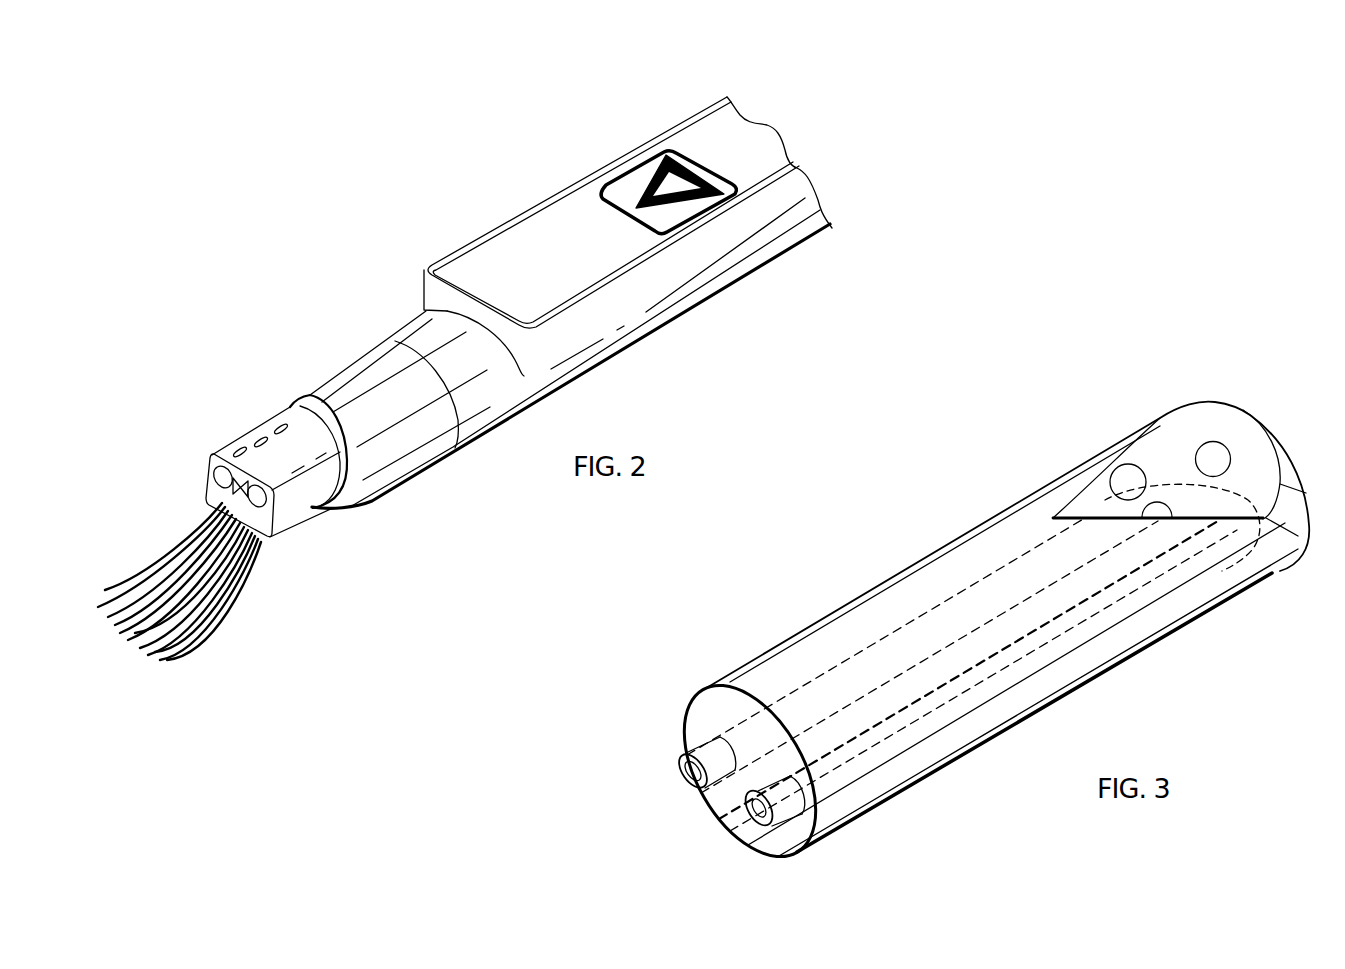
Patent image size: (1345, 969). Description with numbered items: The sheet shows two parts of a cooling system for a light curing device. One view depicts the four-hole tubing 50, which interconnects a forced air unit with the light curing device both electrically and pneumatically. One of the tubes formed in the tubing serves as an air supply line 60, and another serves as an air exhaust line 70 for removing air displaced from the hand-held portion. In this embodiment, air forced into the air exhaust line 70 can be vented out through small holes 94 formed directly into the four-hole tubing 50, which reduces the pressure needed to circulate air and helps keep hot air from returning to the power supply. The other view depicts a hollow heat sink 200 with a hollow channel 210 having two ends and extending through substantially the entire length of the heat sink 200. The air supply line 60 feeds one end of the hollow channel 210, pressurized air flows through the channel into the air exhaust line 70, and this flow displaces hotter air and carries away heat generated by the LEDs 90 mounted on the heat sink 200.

In FIG. 2, the four-hole tubing 50 is at (308, 524).
In FIG. 2, the air supply line 60 is at (260, 500).
In FIG. 3, the air supply line 60 is at (780, 806).
In FIG. 2, the air exhaust line 70 is at (222, 477).
In FIG. 3, the air exhaust line 70 is at (710, 752).
In FIG. 3, the LEDs 90 is at (1157, 500).
In FIG. 2, the small holes 94 is at (281, 427).
In FIG. 3, the hollow heat sink 200 is at (918, 583).
In FIG. 3, the hollow channel 210 is at (1033, 573).